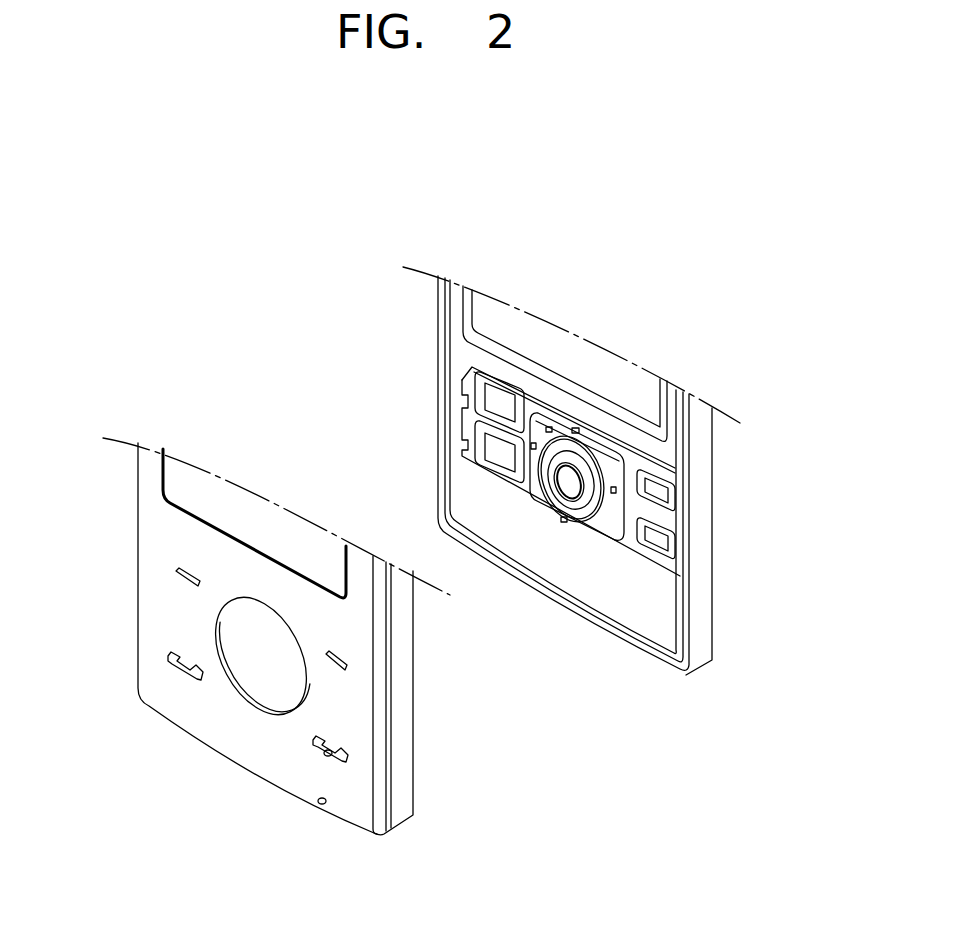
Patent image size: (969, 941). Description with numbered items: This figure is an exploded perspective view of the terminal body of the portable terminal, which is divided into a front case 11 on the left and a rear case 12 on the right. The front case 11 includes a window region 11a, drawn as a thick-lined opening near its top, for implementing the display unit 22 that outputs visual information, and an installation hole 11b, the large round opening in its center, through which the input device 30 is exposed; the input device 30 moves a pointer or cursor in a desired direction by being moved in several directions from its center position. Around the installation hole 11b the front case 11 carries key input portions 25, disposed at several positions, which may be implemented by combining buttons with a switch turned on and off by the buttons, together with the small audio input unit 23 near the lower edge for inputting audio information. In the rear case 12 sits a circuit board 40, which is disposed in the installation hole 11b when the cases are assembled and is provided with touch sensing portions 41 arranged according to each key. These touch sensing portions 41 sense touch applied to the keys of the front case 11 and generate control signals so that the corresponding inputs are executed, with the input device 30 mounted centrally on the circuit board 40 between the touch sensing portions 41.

The front case 11 is at (400, 788).
The window region 11a is at (173, 479).
The installation hole 11b is at (247, 693).
The rear case 12 is at (695, 612).
The display unit 22 is at (607, 384).
The audio input unit 23 is at (320, 805).
The key input portions 25 is at (177, 572).
The input device 30 is at (558, 490).
The circuit board 40 is at (528, 402).
The touch sensing portions 41 is at (480, 438).